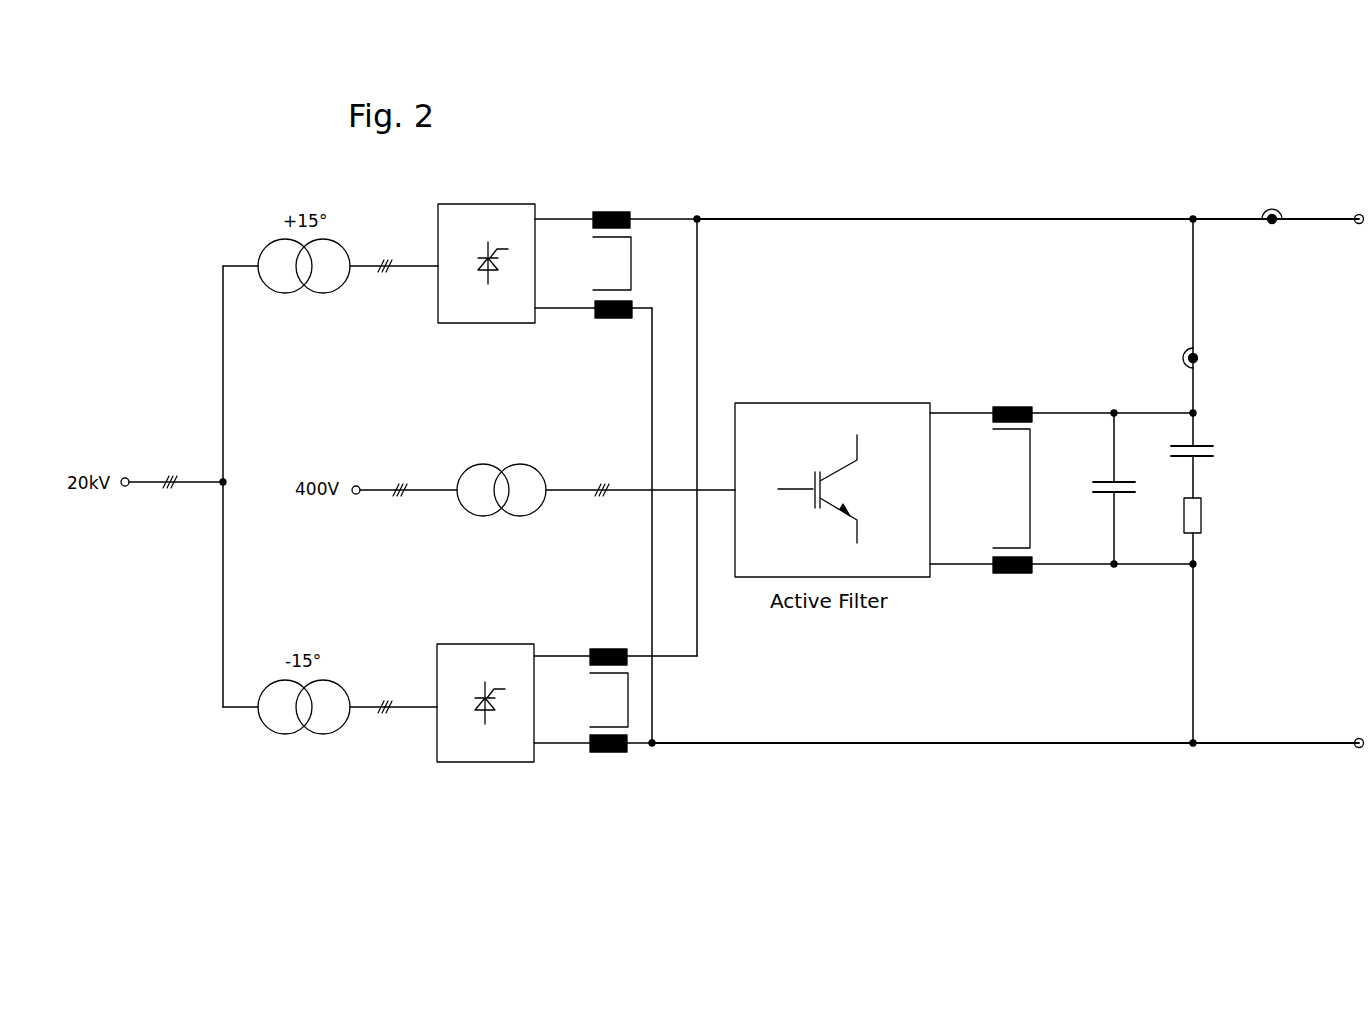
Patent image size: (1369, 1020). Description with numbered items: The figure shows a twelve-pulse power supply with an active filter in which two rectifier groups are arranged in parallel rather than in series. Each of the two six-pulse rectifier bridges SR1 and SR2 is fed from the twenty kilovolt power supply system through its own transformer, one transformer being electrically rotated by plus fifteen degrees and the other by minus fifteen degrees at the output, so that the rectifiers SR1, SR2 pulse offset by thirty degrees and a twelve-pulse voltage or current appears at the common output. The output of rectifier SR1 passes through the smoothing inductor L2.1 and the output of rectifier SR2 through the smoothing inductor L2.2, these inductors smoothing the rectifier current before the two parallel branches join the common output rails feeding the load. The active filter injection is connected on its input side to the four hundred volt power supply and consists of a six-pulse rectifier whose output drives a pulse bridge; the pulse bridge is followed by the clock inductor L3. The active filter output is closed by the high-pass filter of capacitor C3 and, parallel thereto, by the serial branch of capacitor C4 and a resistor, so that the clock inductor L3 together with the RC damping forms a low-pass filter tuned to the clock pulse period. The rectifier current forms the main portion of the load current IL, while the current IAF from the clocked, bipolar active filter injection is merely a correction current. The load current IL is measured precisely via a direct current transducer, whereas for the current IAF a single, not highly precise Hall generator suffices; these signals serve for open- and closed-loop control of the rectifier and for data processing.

The rectifier SR1 is at (486, 280).
The rectifier SR2 is at (485, 716).
The smoothing inductor L2.1 is at (616, 254).
The smoothing inductor L2.2 is at (615, 688).
The clock inductor L3 is at (1022, 479).
The capacitor C3 is at (1098, 488).
The capacitor C4 is at (1212, 488).
The load current IL is at (1272, 223).
The current from the active filter supply IAF is at (1197, 358).